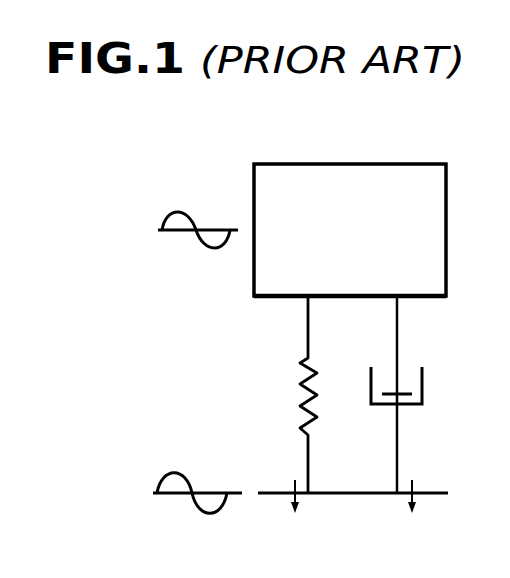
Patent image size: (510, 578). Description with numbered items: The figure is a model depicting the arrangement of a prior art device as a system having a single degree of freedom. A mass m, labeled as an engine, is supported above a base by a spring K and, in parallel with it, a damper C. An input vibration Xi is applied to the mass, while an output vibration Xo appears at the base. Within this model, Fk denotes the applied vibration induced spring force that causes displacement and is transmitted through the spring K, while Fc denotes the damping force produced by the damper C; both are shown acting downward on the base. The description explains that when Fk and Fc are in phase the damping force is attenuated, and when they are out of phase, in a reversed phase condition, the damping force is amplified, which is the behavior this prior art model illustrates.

The engine mass m is at (350, 230).
The spring (stiffness) K is at (294, 394).
The damper C is at (408, 394).
The input vibration Xi is at (198, 237).
The output vibration Xo is at (197, 480).
The applied vibration induced spring force Fk is at (295, 511).
The damping force Fc is at (411, 510).